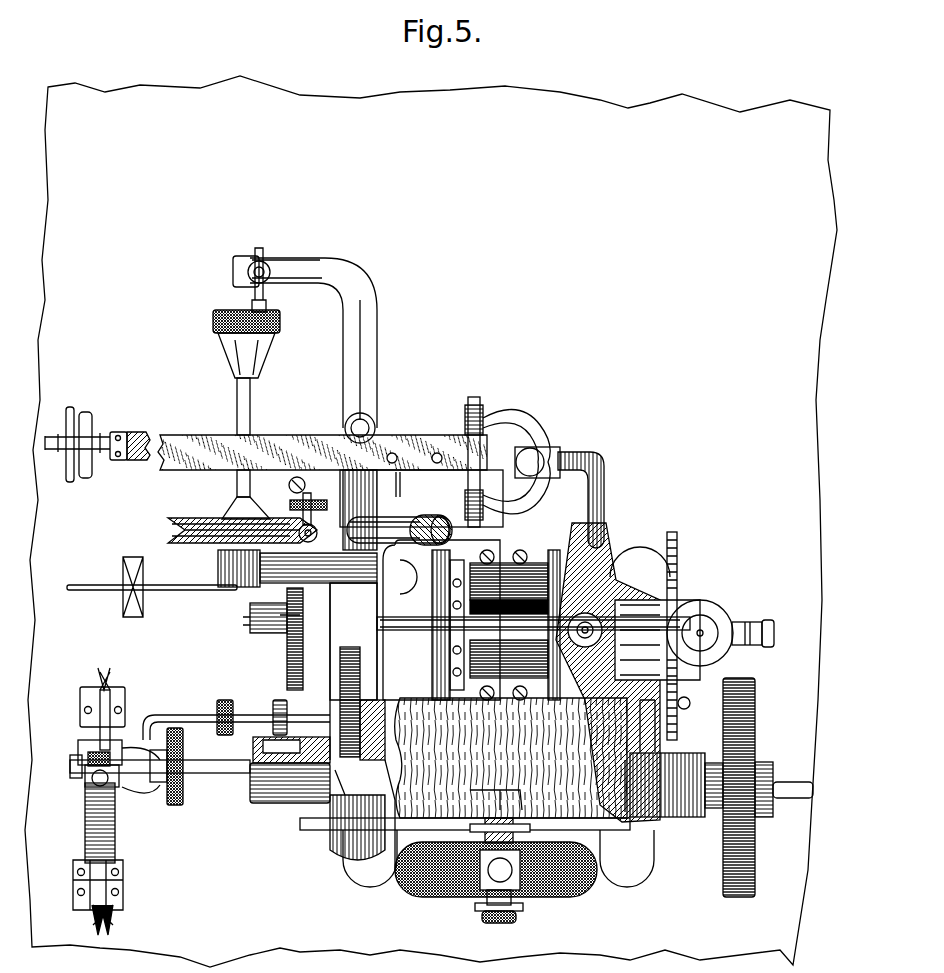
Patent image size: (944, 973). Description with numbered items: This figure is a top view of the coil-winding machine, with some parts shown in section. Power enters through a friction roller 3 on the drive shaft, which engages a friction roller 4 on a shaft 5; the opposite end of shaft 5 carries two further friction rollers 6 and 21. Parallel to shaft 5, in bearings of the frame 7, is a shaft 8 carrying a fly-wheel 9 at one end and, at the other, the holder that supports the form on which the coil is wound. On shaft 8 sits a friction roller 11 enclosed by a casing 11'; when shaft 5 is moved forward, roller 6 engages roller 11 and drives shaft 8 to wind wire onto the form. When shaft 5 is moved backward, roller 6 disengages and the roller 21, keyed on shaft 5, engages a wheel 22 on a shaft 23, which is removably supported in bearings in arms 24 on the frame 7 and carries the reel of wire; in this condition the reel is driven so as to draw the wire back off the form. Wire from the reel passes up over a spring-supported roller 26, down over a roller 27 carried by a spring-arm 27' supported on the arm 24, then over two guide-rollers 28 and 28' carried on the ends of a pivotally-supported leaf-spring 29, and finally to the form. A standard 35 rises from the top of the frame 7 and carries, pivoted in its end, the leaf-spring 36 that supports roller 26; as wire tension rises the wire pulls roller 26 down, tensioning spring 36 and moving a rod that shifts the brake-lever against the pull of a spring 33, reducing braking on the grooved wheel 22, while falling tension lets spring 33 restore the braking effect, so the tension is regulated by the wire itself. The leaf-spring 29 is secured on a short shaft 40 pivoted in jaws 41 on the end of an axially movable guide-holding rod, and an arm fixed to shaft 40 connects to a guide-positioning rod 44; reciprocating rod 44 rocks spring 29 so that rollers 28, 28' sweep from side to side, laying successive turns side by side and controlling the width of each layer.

The friction roller 3 is at (712, 612).
The friction roller 4 is at (678, 556).
The shaft 5 is at (432, 632).
The friction roller 6 is at (340, 672).
The frame 7 is at (511, 758).
The shaft 8 is at (244, 775).
The fly-wheel 9 is at (756, 860).
The friction roller 11 is at (290, 791).
The casing 11' is at (332, 815).
The friction roller 21 is at (287, 660).
The wheel 22 is at (185, 508).
The shaft 23 is at (236, 412).
The arm 24 is at (286, 272).
The spring-supported roller 26 is at (88, 418).
The roller 27 is at (120, 599).
The spring-arm 27' is at (152, 602).
The guide-roller 28 is at (115, 702).
The guide-roller 28' is at (121, 920).
The leaf-spring 29 is at (108, 838).
The spring 33 is at (420, 518).
The standard 35 is at (603, 478).
The leaf-spring 36 is at (292, 452).
The shaft 40 is at (86, 780).
The jaws 41 is at (82, 745).
The guide-positioning rod 44 is at (180, 724).